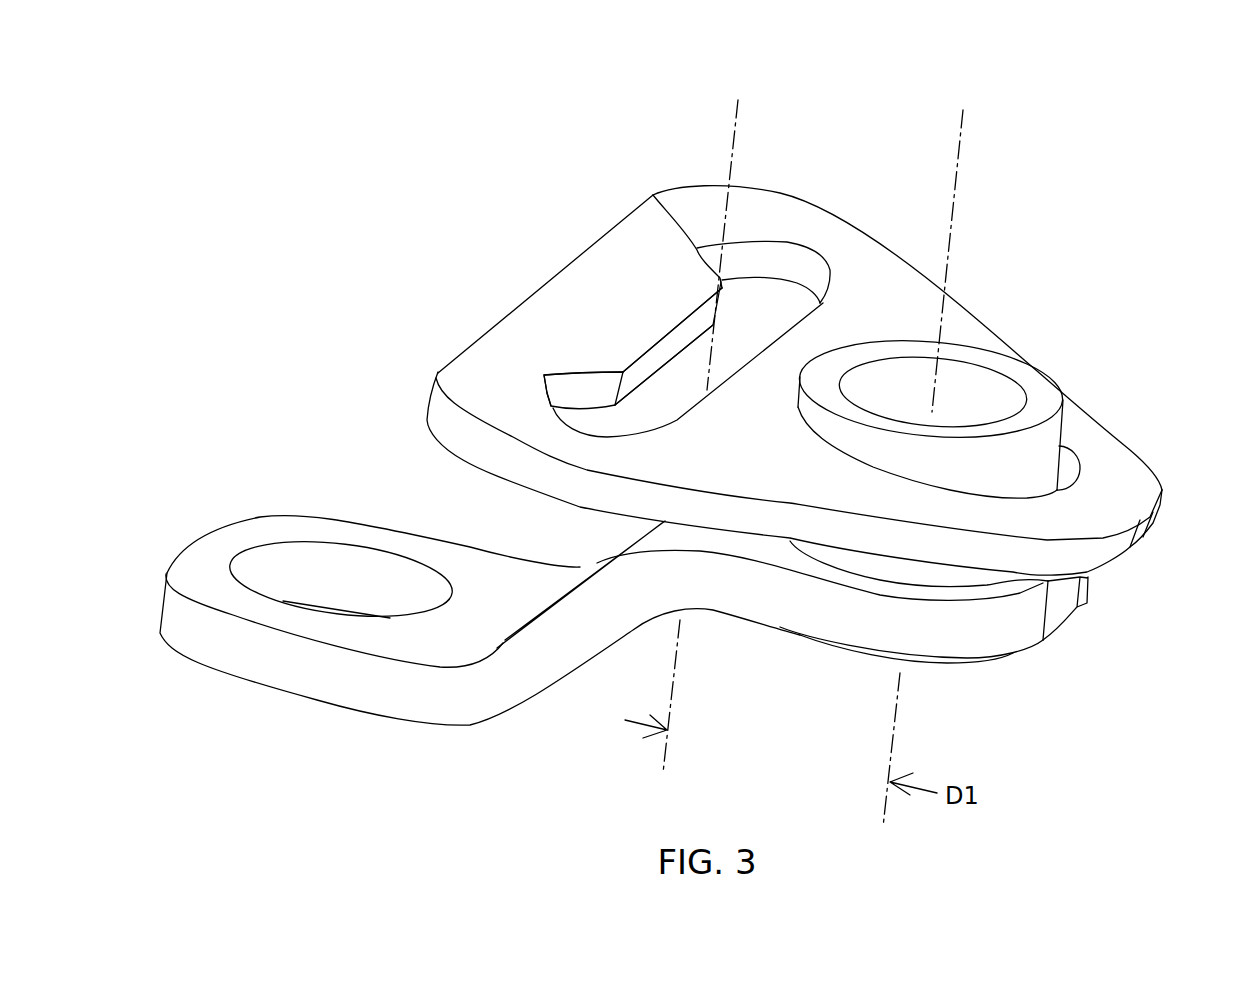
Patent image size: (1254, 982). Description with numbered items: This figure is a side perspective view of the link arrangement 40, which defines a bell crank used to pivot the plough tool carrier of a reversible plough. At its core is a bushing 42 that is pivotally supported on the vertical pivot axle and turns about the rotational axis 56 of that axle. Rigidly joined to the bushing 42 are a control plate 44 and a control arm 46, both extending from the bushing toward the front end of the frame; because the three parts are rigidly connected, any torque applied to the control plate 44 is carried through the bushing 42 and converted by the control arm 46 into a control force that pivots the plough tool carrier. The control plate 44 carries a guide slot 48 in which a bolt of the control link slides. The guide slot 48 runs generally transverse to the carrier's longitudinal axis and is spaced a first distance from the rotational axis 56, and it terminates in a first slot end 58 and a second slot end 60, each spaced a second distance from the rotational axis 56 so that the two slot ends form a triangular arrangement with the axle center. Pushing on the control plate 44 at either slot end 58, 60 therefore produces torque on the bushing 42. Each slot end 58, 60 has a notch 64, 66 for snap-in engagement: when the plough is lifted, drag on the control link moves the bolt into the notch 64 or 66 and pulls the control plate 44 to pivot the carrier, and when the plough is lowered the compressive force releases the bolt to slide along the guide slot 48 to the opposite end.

The link arrangement 40 is at (867, 181).
The bushing 42 is at (1028, 458).
The control plate 44 is at (633, 300).
The control arm 46 is at (590, 610).
The guide slot 48 is at (737, 322).
The rotational axis 56 is at (900, 739).
The first slot end 58 is at (580, 390).
The second slot end 60 is at (802, 265).
The notch 64 is at (549, 372).
The notch 66 is at (655, 195).